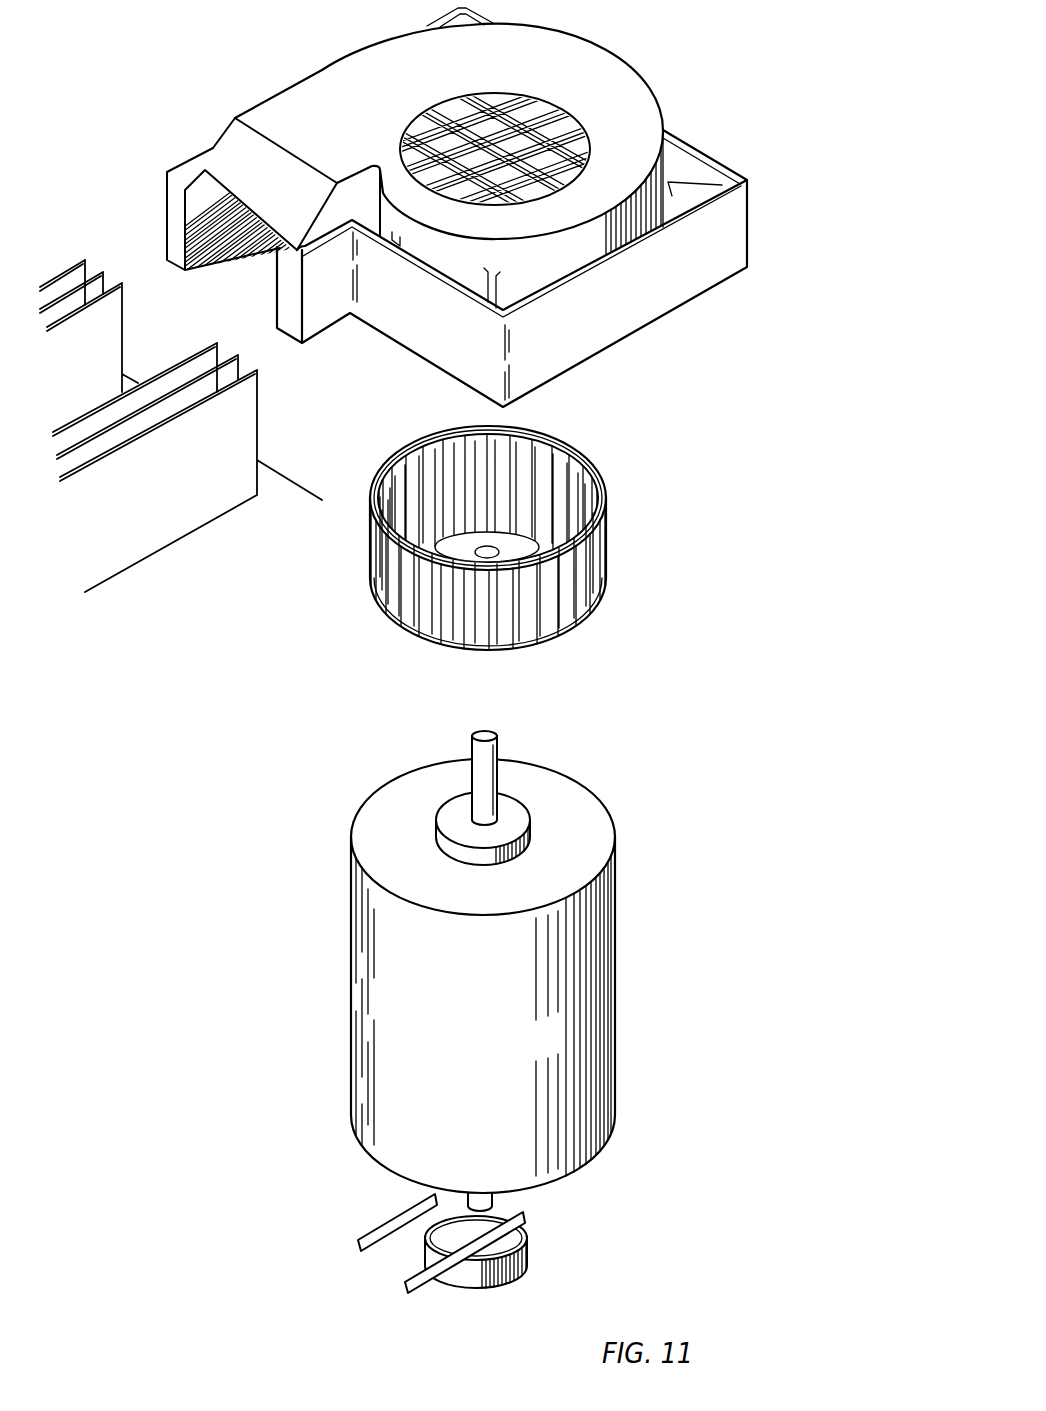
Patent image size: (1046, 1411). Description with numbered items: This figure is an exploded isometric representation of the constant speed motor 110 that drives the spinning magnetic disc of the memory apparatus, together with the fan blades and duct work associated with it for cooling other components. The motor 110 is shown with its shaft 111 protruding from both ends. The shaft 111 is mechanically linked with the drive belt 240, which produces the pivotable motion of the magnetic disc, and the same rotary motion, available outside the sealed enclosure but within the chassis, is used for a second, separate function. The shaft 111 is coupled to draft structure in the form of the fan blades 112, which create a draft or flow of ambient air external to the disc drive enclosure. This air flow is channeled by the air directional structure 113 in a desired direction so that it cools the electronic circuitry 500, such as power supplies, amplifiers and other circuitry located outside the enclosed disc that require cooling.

The air directional structure 113 is at (664, 125).
The fan blades 112 is at (593, 547).
The shaft 111 is at (497, 748).
The constant speed motor 110 is at (615, 988).
The drive belt 240 is at (367, 1227).
The electronic circuitry 500 is at (257, 569).